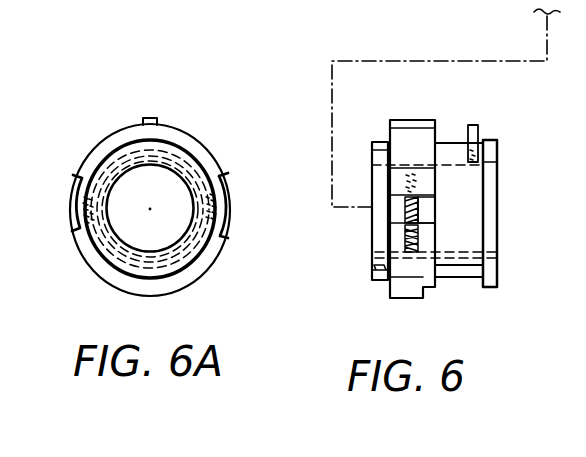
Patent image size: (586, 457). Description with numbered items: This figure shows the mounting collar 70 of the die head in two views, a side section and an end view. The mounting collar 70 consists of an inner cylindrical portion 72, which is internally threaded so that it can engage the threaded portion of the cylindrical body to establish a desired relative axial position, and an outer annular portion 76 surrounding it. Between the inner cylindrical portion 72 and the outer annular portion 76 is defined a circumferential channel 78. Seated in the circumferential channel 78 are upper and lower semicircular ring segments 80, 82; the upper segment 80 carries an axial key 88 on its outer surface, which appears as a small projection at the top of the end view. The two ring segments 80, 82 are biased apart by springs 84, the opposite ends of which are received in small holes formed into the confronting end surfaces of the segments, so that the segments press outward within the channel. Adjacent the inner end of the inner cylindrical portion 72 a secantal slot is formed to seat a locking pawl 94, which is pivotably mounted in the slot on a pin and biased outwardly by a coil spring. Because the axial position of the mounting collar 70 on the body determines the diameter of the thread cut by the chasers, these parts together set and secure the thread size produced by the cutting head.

In FIG. 6A, the mounting collar 70 is at (70, 207).
In FIG. 6, the mounting collar 70 is at (498, 215).
In FIG. 6, the inner cylindrical portion 72 is at (458, 268).
In FIG. 6A, the outer annular portion 76 is at (178, 155).
In FIG. 6, the outer annular portion 76 is at (380, 267).
In FIG. 6, the circumferential channel 78 is at (428, 210).
In FIG. 6A, the upper semicircular ring segment 80 is at (128, 136).
In FIG. 6A, the lower semicircular ring segment 82 is at (145, 282).
In FIG. 6, the springs 84 is at (404, 222).
In FIG. 6A, the axial key 88 is at (152, 117).
In FIG. 6, the locking pawl 94 is at (478, 132).